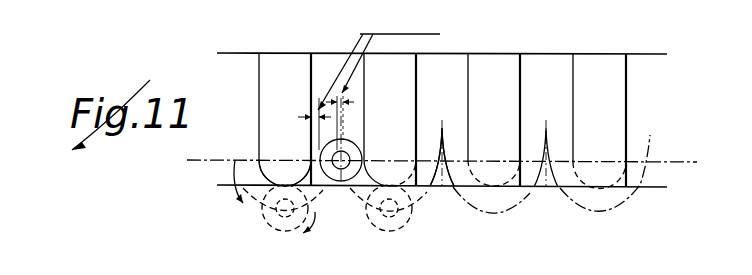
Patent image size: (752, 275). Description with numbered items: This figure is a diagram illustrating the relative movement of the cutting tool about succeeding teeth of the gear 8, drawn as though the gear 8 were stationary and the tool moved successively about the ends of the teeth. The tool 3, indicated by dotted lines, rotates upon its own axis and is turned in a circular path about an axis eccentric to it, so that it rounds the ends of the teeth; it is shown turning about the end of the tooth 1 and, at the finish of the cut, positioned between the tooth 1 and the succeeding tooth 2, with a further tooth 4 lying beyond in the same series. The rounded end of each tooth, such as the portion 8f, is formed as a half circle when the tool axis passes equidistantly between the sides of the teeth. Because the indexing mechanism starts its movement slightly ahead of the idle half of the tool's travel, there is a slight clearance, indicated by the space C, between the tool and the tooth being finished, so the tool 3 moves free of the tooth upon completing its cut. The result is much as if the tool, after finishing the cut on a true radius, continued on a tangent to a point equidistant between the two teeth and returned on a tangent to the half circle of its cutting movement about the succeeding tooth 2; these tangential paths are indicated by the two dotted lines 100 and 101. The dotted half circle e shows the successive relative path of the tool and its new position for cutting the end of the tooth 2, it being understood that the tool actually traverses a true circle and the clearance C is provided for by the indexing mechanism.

The tooth 1 is at (285, 148).
The succeeding tooth 2 is at (390, 149).
The tool 3 is at (262, 250).
The fourth compartment 4 is at (599, 150).
The gear 8 is at (412, 88).
The rounded compartment bottom 8f is at (309, 158).
The dotted line 100 is at (440, 143).
The dotted line 101 is at (446, 148).
The clearance space C is at (312, 110).
The dotted half circle e is at (475, 210).